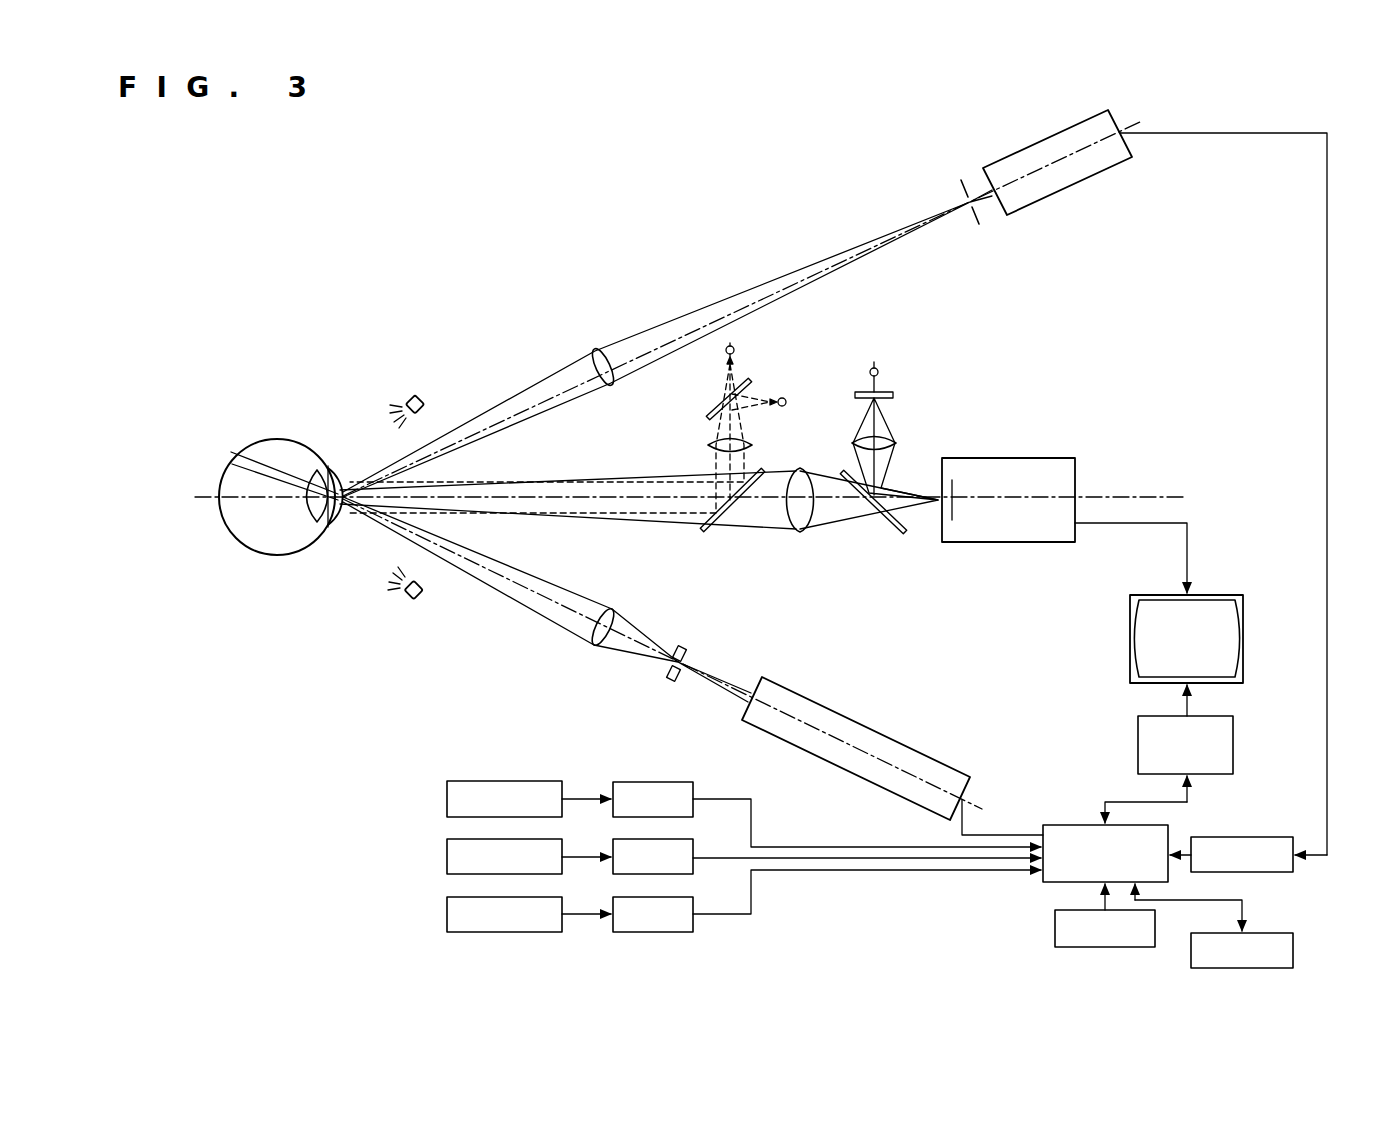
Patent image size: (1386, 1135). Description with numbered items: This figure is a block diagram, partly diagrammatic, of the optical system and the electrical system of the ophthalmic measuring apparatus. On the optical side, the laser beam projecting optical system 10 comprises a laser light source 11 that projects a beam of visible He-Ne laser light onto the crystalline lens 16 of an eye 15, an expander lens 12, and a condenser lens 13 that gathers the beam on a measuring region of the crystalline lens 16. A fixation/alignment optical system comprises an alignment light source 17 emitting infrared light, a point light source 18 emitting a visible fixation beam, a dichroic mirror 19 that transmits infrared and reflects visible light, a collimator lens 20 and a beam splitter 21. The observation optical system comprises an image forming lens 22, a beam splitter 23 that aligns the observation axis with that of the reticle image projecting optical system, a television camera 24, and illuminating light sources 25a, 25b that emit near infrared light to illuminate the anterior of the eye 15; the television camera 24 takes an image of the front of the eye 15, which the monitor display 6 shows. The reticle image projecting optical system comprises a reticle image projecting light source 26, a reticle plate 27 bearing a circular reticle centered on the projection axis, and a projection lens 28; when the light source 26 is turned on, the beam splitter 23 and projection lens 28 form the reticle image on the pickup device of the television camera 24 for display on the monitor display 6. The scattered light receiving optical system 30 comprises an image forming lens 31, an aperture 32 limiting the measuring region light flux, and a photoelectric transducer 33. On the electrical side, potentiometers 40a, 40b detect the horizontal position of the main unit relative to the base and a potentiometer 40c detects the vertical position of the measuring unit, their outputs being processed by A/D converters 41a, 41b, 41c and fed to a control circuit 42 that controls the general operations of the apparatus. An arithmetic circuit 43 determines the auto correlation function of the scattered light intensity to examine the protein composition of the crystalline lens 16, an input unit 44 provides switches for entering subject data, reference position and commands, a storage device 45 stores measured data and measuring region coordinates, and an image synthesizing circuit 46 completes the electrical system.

The monitor display 6 is at (1222, 597).
The laser beam projecting optical system 10 is at (628, 695).
The laser light source 11 is at (872, 732).
The expander lens 12 is at (693, 652).
The condenser lens 13 is at (590, 635).
The eye 15 is at (248, 540).
The crystalline lens 16 is at (312, 518).
The alignment light source 17 is at (737, 350).
The point light source 18 is at (787, 402).
The dichroic mirror 19 is at (707, 413).
The collimator lens 20 is at (708, 446).
The beam splitter 21 is at (702, 538).
The image forming lens 22 is at (803, 535).
The beam splitter 23 is at (892, 537).
The television camera 24 is at (1033, 462).
The illuminating light source 25a is at (413, 393).
The illuminating light source 25b is at (410, 607).
The reticle image projecting light source 26 is at (877, 366).
The reticle plate 27 is at (893, 393).
The projection lens 28 is at (897, 443).
The scattered light receiving optical system 30 is at (681, 290).
The image forming lens 31 is at (597, 350).
The aperture 32 is at (955, 195).
The photoelectric transducer 33 is at (1082, 180).
The potentiometer 40a is at (447, 802).
The potentiometer 40b is at (447, 858).
The potentiometer 40c is at (447, 916).
The A/D converter 41a is at (690, 797).
The A/D converter 41b is at (695, 850).
The A/D converter 41c is at (695, 922).
The control circuit 42 is at (1067, 825).
The arithmetic circuit 43 is at (1258, 838).
The input unit 44 is at (1055, 931).
The storage device 45 is at (1293, 955).
The image synthesizing circuit 46 is at (1233, 740).